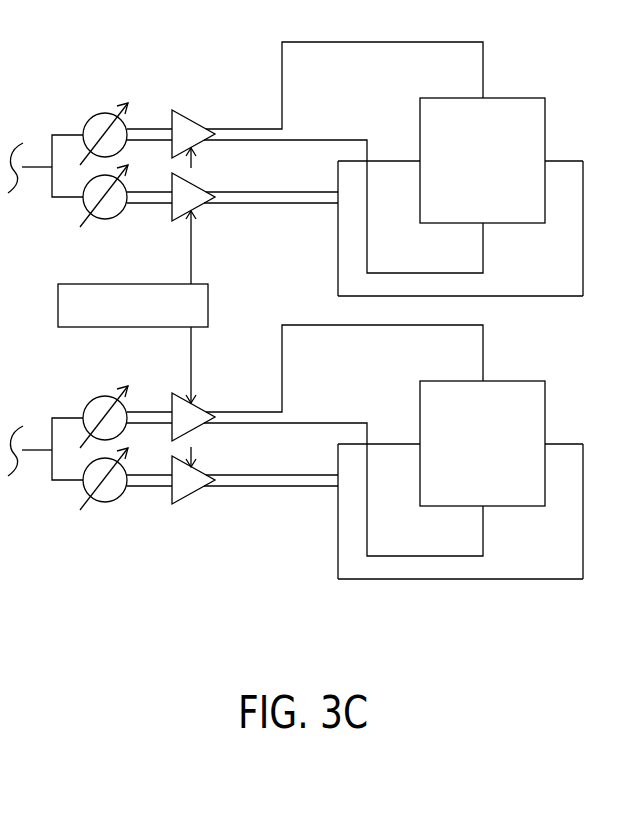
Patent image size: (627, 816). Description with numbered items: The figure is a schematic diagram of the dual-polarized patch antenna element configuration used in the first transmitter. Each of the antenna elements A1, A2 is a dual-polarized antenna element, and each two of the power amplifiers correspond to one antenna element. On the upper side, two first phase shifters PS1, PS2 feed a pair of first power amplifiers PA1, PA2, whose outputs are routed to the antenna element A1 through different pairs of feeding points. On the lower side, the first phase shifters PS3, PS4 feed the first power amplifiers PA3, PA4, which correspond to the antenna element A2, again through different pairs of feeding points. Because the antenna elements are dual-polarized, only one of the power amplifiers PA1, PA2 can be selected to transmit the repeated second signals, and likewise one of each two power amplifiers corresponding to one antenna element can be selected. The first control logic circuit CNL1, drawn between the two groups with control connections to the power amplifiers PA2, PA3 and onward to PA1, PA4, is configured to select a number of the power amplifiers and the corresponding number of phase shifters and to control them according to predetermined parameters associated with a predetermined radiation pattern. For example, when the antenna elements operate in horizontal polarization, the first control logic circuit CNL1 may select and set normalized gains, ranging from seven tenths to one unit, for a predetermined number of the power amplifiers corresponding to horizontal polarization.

The first phase shifter PS1 is at (104, 134).
The first phase shifter PS2 is at (104, 196).
The first phase shifter PS3 is at (104, 417).
The first phase shifter PS4 is at (104, 479).
The first power amplifier PA1 is at (196, 146).
The first power amplifier PA2 is at (196, 209).
The first power amplifier PA3 is at (196, 429).
The first power amplifier PA4 is at (196, 492).
The first control logic circuit CNL1 is at (133, 307).
The antenna element A1 is at (482, 160).
The antenna element A2 is at (482, 443).